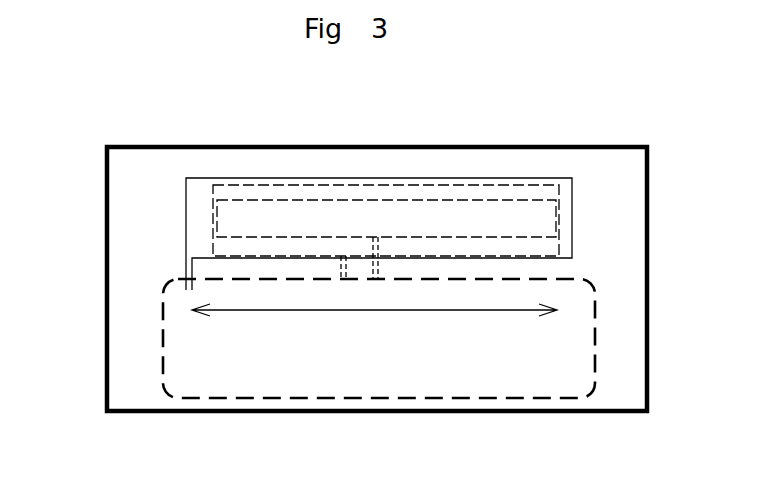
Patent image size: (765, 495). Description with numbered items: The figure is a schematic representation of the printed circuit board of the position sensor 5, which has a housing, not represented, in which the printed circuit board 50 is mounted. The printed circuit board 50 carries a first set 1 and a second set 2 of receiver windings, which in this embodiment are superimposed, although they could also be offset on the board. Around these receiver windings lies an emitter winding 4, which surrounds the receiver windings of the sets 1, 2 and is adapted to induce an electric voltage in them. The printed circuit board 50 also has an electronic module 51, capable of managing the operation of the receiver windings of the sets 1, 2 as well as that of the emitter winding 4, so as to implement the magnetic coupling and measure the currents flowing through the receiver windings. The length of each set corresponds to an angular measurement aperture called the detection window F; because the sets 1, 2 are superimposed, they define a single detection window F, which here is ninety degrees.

The position sensor 5 is at (86, 98).
The printed circuit board 50 is at (212, 145).
The emitter winding 4 is at (403, 178).
The first set of receiver windings 1 is at (446, 185).
The second set of receiver windings 2 is at (492, 200).
The electronic module 51 is at (380, 366).
The detection window F is at (467, 310).